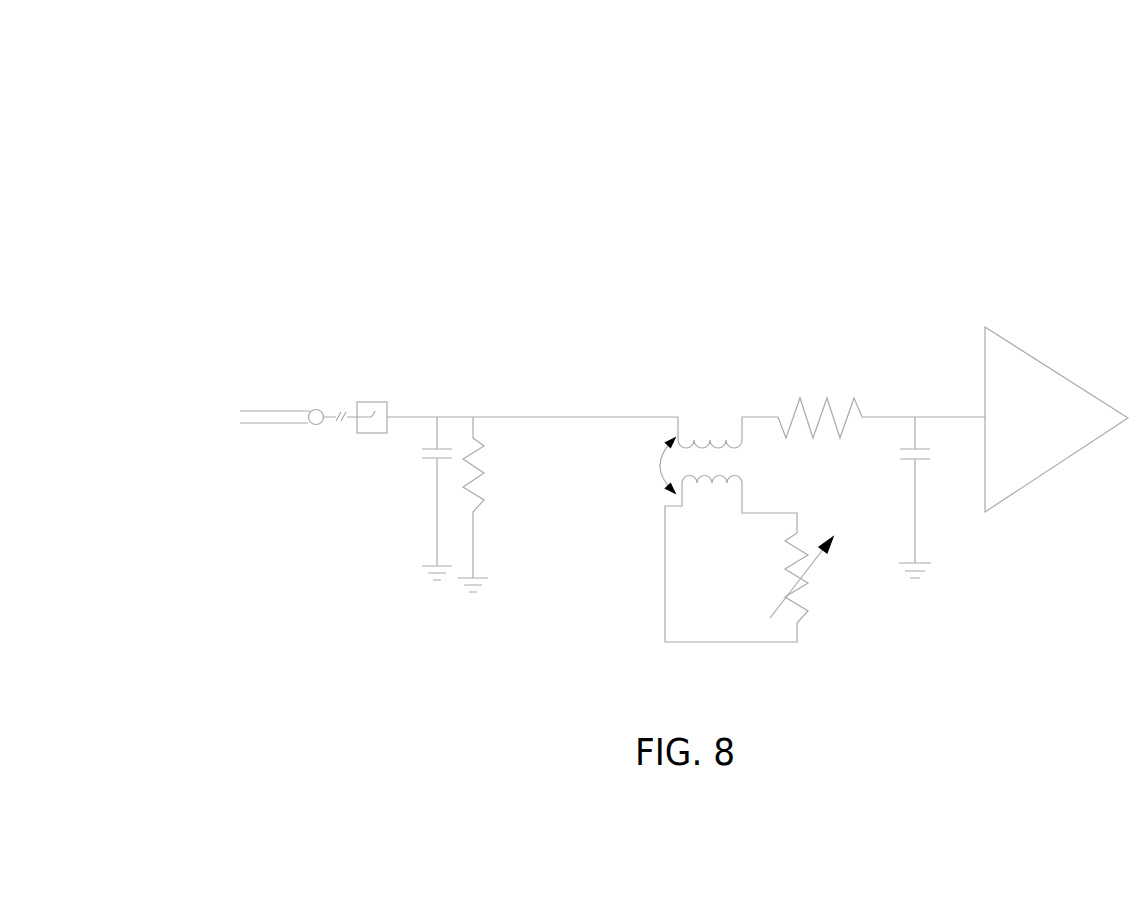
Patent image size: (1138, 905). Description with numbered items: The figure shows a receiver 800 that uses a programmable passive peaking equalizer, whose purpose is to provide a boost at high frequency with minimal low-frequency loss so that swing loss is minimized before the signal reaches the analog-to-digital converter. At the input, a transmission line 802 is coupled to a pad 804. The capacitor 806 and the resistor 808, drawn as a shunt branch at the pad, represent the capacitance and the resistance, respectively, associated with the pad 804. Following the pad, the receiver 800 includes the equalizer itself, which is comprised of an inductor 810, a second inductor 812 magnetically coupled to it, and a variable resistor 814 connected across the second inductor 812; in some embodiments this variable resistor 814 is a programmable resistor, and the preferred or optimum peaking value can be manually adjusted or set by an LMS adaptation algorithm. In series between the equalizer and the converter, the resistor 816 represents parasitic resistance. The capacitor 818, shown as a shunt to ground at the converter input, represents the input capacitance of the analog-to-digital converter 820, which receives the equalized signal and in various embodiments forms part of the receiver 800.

The receiver 800 is at (868, 120).
The transmission line 802 is at (260, 395).
The pad 804 is at (390, 399).
The capacitor 806 is at (410, 460).
The resistor 808 is at (488, 503).
The inductor 810 is at (737, 419).
The inductor 812 is at (743, 489).
The variable resistor 814 is at (810, 602).
The resistor 816 is at (857, 396).
The capacitor 818 is at (890, 460).
The ADC 820 is at (1033, 349).